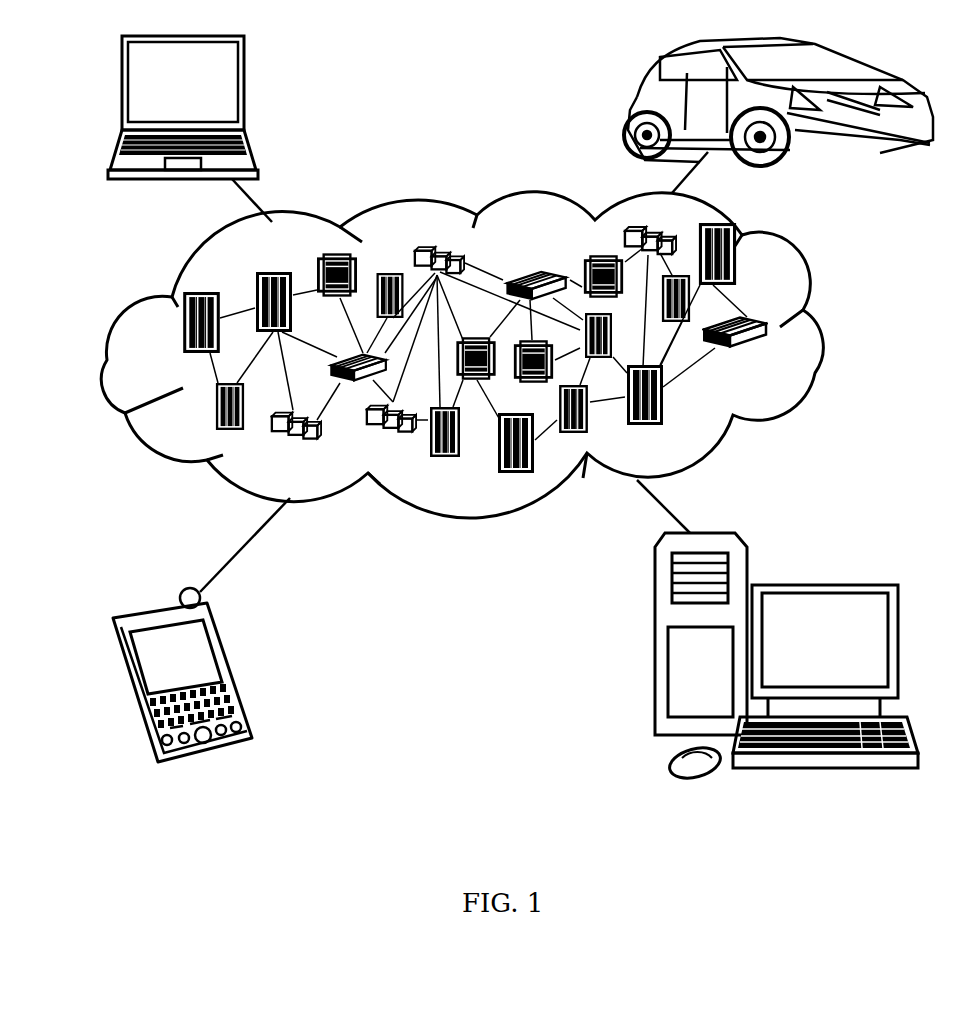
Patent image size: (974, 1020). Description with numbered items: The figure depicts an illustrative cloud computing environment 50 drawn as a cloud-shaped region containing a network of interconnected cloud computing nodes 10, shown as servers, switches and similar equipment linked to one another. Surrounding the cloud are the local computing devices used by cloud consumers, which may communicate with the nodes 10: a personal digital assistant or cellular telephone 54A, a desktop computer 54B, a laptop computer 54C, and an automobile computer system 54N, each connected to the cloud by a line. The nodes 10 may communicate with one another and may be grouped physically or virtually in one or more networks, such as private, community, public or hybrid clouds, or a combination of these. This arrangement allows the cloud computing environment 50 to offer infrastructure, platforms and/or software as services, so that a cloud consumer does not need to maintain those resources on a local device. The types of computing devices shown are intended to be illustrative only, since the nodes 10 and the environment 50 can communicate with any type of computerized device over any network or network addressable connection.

The cloud computing nodes 10 is at (782, 362).
The cloud computing environment 50 is at (823, 328).
The personal digital assistant (PDA) or cellular telephone 54A is at (237, 666).
The desktop computer 54B is at (822, 585).
The laptop computer 54C is at (245, 90).
The automobile computer system 54N is at (630, 104).